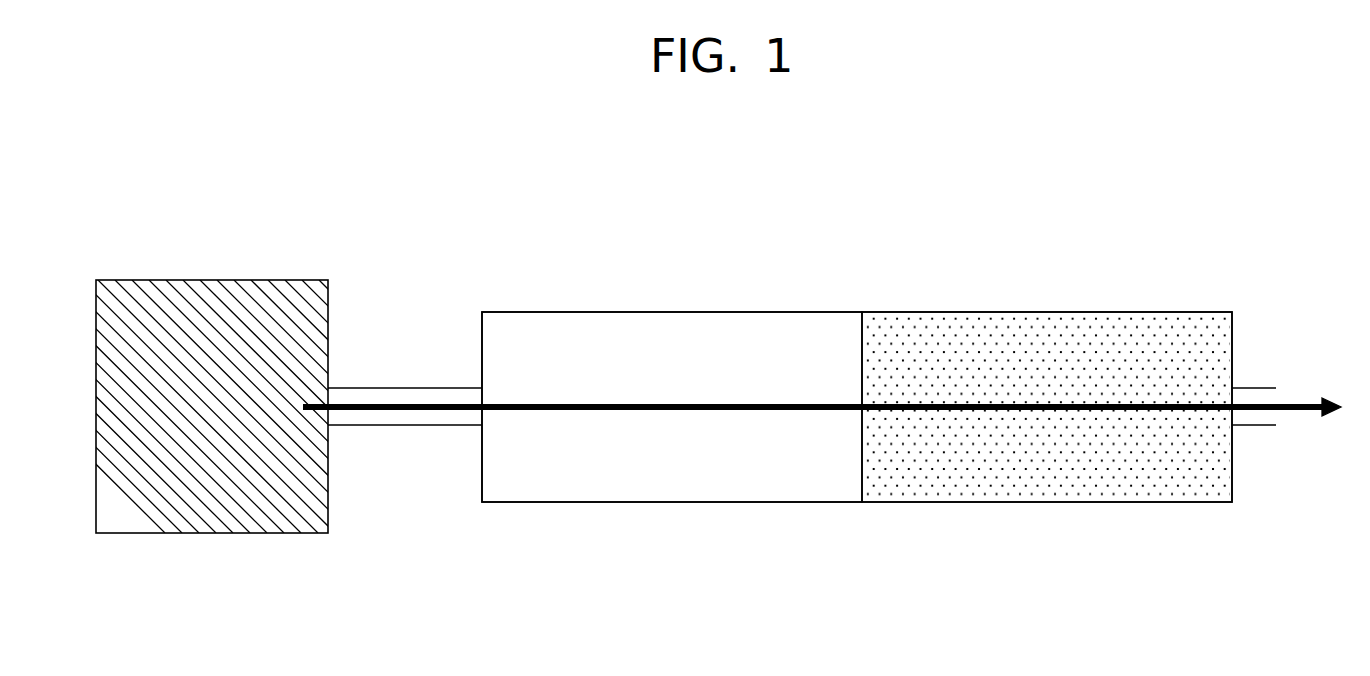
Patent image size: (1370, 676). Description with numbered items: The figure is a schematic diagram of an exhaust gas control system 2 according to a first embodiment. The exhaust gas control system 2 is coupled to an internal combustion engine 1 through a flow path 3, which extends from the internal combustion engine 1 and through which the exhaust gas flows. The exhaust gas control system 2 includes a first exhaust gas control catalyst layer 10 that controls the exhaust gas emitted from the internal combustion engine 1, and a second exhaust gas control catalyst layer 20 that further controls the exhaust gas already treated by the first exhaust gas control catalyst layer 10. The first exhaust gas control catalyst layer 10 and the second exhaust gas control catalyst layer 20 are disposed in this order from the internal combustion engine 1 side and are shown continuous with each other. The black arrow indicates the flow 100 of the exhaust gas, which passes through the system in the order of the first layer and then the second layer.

The internal combustion engine 1 is at (213, 303).
The exhaust gas control system 2 is at (826, 296).
The flow path 3 is at (428, 387).
The first exhaust gas control catalyst layer 10 is at (668, 473).
The second exhaust gas control catalyst layer 20 is at (1002, 473).
The flow of the exhaust gas 100 is at (372, 410).